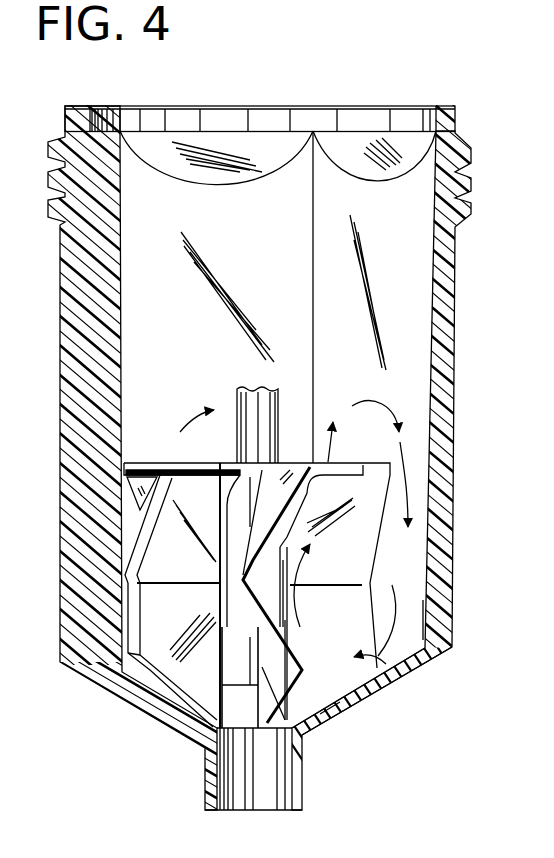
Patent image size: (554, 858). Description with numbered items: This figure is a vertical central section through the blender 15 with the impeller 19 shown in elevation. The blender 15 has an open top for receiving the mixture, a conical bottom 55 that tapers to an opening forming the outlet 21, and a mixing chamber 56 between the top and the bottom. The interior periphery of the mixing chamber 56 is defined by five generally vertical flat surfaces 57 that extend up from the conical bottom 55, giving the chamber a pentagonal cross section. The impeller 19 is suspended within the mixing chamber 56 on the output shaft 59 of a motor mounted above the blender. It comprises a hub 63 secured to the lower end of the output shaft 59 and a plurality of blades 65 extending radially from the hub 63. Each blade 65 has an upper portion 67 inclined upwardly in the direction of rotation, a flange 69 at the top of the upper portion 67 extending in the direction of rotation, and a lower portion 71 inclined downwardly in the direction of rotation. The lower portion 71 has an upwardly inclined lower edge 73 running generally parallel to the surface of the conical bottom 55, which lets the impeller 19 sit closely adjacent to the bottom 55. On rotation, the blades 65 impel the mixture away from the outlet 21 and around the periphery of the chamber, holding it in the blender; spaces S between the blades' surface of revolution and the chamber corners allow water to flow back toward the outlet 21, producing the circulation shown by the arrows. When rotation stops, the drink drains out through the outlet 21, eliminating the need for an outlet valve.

The blender 15 is at (456, 318).
The impeller 19 is at (300, 446).
The outlet 21 is at (270, 792).
The conical bottom 55 is at (386, 682).
The mixing chamber 56 is at (280, 206).
The flat surfaces 57 is at (198, 385).
The output shaft 59 is at (279, 400).
The hub 63 is at (288, 546).
The blades 65 is at (371, 582).
The upper portion 67 is at (378, 506).
The flange 69 is at (348, 445).
The lower portion 71 is at (386, 668).
The lower edge 73 is at (357, 706).
The spaces S is at (412, 564).